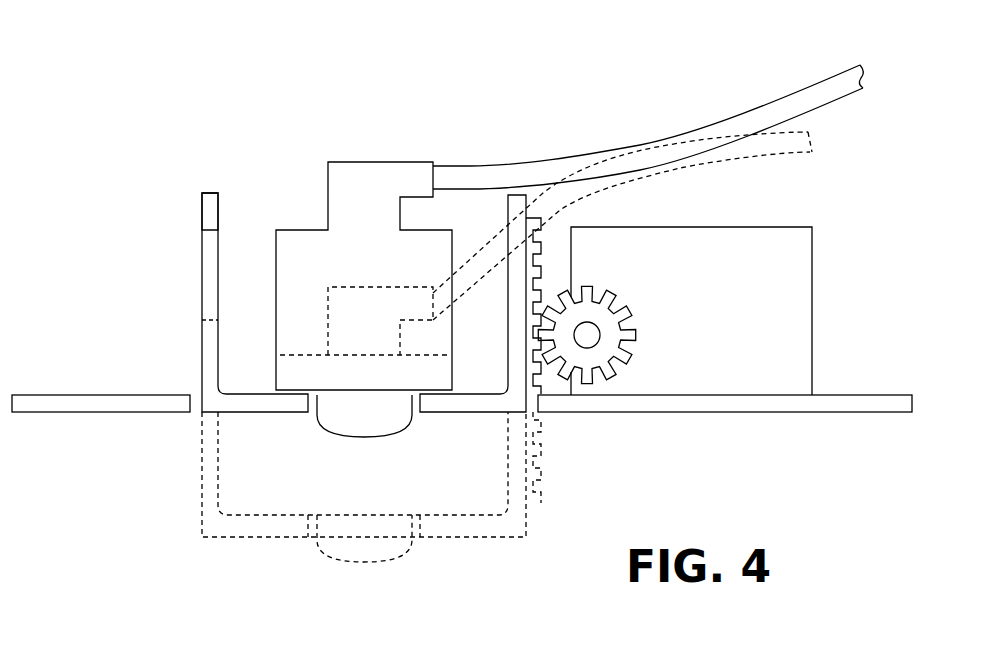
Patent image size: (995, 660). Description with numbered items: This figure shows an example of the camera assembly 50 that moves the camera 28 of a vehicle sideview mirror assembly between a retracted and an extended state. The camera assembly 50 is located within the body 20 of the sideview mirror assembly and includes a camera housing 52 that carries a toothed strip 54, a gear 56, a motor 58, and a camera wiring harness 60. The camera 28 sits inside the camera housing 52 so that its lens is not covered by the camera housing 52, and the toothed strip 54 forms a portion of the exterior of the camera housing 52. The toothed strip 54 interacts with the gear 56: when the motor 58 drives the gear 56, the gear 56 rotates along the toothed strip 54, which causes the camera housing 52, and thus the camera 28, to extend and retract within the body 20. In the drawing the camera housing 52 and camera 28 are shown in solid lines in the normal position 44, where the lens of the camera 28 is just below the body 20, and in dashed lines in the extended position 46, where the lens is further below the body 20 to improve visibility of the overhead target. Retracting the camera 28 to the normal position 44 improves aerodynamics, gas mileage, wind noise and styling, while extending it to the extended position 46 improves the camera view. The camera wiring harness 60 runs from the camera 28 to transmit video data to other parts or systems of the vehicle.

The body 20 is at (72, 412).
The camera 28 is at (363, 425).
The normal position 44 is at (316, 384).
The extended position 46 is at (317, 542).
The camera assembly 50 is at (202, 202).
The camera housing 52 is at (202, 237).
The toothed strip 54 is at (545, 225).
The gear 56 is at (638, 337).
The motor 58 is at (813, 303).
The camera wiring harness 60 is at (783, 91).